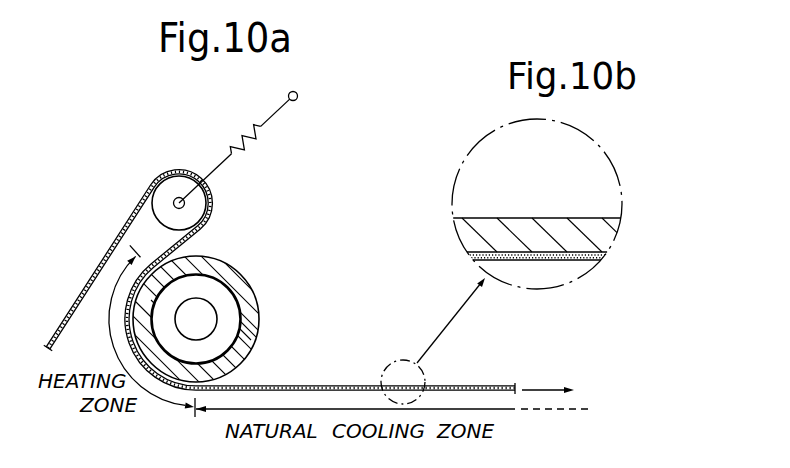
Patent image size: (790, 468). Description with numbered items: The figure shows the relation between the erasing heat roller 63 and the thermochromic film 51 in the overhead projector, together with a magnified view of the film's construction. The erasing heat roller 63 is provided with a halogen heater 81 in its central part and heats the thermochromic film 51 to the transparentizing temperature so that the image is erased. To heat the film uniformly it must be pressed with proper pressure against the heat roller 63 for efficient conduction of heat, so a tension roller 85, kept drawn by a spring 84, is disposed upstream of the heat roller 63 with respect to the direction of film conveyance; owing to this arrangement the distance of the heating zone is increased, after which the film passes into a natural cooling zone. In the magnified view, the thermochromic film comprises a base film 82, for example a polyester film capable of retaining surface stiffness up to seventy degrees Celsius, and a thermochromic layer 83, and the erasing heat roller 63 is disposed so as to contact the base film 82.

In FIG. 10A, the spring 84 is at (271, 114).
In FIG. 10A, the tension roller 85 is at (177, 186).
In FIG. 10A, the erasing heat roller 63 is at (232, 279).
In FIG. 10A, the halogen heater 81 is at (203, 318).
In FIG. 10A, the thermochromic film 51 is at (308, 386).
In FIG. 10B, the base film 82 is at (486, 226).
In FIG. 10B, the thermochromic layer 83 is at (575, 258).